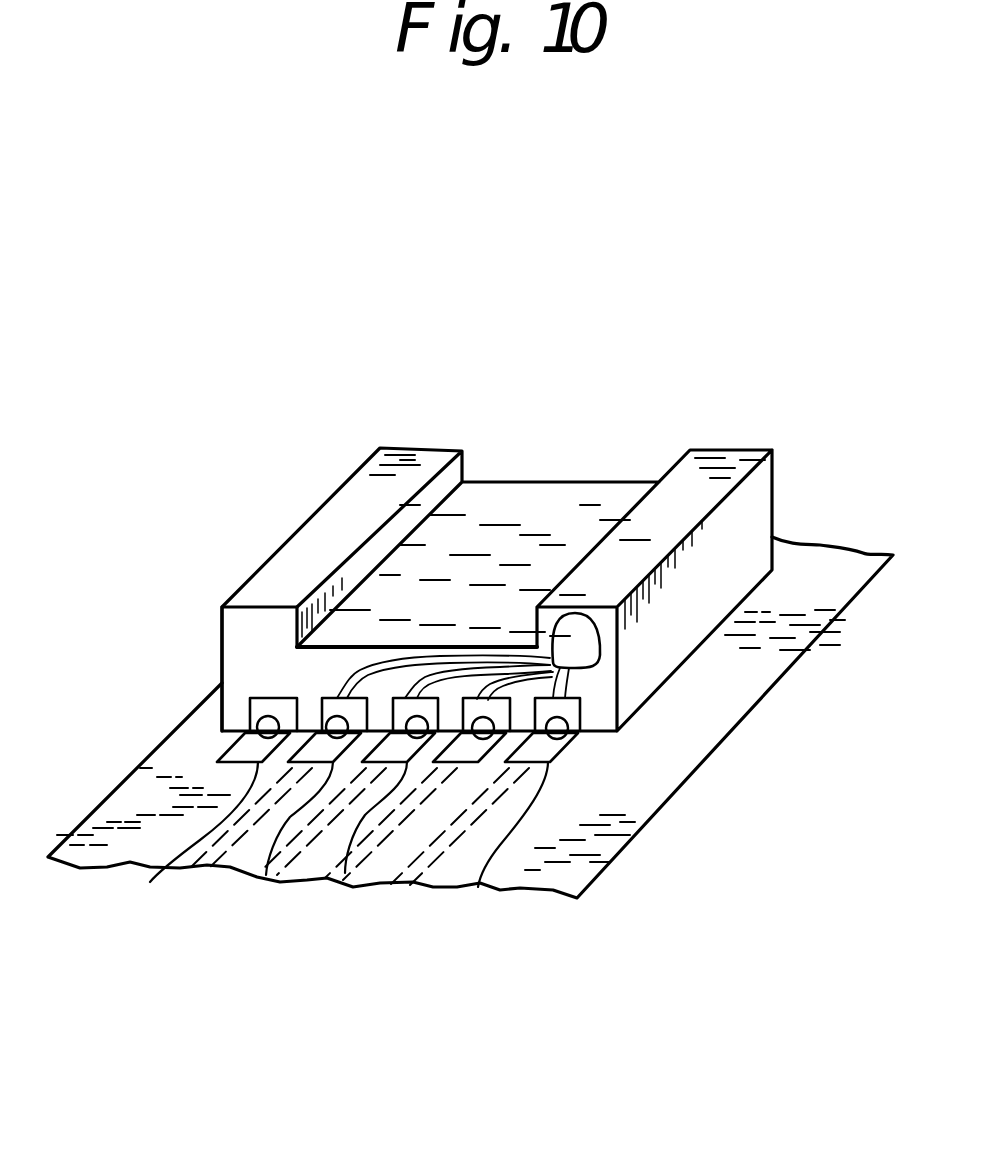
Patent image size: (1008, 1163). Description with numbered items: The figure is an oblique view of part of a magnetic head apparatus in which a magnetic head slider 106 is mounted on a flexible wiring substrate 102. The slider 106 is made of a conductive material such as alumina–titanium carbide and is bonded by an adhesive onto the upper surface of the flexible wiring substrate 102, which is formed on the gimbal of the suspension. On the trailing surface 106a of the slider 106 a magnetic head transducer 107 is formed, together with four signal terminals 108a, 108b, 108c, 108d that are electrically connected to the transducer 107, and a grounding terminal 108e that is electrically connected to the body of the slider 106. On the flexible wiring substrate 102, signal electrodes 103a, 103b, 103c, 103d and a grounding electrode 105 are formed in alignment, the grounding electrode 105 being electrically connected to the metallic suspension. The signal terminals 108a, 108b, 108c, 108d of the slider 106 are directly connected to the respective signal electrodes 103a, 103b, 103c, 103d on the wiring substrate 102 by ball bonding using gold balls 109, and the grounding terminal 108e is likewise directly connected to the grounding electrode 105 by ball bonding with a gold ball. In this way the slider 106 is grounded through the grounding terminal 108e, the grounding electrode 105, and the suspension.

The flexible wiring substrate 102 is at (713, 722).
The signal electrode 103a is at (150, 882).
The signal electrode 103b is at (266, 875).
The signal electrode 103c is at (345, 873).
The signal electrode 103d is at (478, 887).
The grounding electrode 105 is at (232, 752).
The magnetic head slider 106 is at (350, 450).
The trailing surface 106a is at (242, 650).
The magnetic head transducer 107 is at (593, 643).
The signal terminal 108a is at (350, 690).
The signal terminal 108b is at (405, 690).
The signal terminal 108c is at (478, 690).
The signal terminal 108d is at (572, 712).
The grounding terminal 108e is at (250, 707).
The gold ball 109 is at (558, 737).